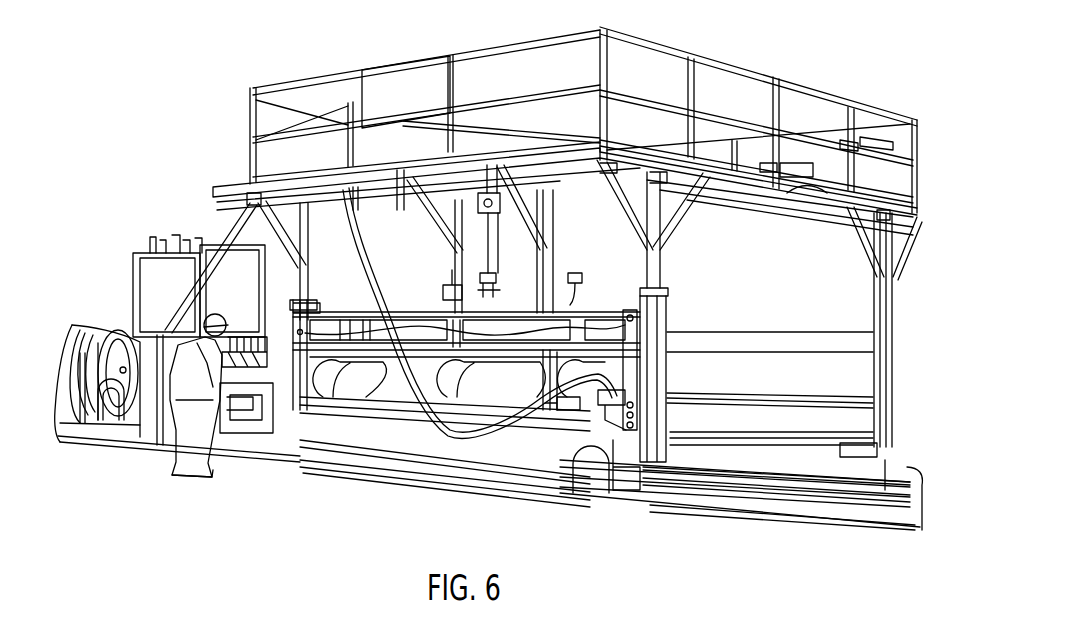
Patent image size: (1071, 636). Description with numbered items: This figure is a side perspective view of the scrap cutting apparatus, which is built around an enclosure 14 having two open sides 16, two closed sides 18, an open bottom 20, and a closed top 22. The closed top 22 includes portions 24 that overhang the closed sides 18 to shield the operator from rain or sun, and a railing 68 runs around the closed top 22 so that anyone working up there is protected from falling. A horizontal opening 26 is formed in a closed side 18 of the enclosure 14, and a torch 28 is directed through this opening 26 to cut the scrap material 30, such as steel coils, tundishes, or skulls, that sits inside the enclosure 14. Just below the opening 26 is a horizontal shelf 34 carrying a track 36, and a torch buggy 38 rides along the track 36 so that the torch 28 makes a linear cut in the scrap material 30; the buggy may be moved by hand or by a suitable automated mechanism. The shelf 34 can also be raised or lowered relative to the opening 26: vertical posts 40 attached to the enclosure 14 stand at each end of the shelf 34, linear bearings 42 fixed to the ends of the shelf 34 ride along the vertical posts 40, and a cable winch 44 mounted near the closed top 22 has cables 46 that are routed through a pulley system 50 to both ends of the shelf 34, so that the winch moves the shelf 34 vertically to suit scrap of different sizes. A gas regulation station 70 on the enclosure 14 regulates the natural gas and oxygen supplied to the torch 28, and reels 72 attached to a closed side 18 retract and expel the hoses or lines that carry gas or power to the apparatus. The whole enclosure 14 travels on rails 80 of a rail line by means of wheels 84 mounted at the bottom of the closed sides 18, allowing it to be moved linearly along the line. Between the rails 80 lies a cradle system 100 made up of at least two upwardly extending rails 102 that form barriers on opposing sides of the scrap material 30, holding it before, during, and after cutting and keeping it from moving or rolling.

The enclosure 14 is at (200, 111).
The open sides 16 is at (240, 378).
The closed sides 18 is at (830, 273).
The open bottom 20 is at (788, 462).
The closed top 22 is at (617, 148).
The portions 24 is at (573, 163).
The opening 26 is at (512, 357).
The torch 28 is at (620, 400).
The scrap material 30 is at (485, 390).
The horizontal shelf 34 is at (345, 417).
The track 36 is at (318, 405).
The torch buggy 38 is at (570, 400).
The vertical posts 40 is at (627, 357).
The linear bearings 42 is at (627, 417).
The cable winch 44 is at (492, 203).
The cables 46 is at (423, 333).
The pulley system 50 is at (483, 300).
The railing 68 is at (770, 77).
The gas regulation station 70 is at (147, 283).
The reels 72 is at (85, 378).
The rails 80 is at (910, 470).
The wheels 84 is at (595, 483).
The cradle system 100 is at (817, 483).
The rails 102 is at (892, 473).